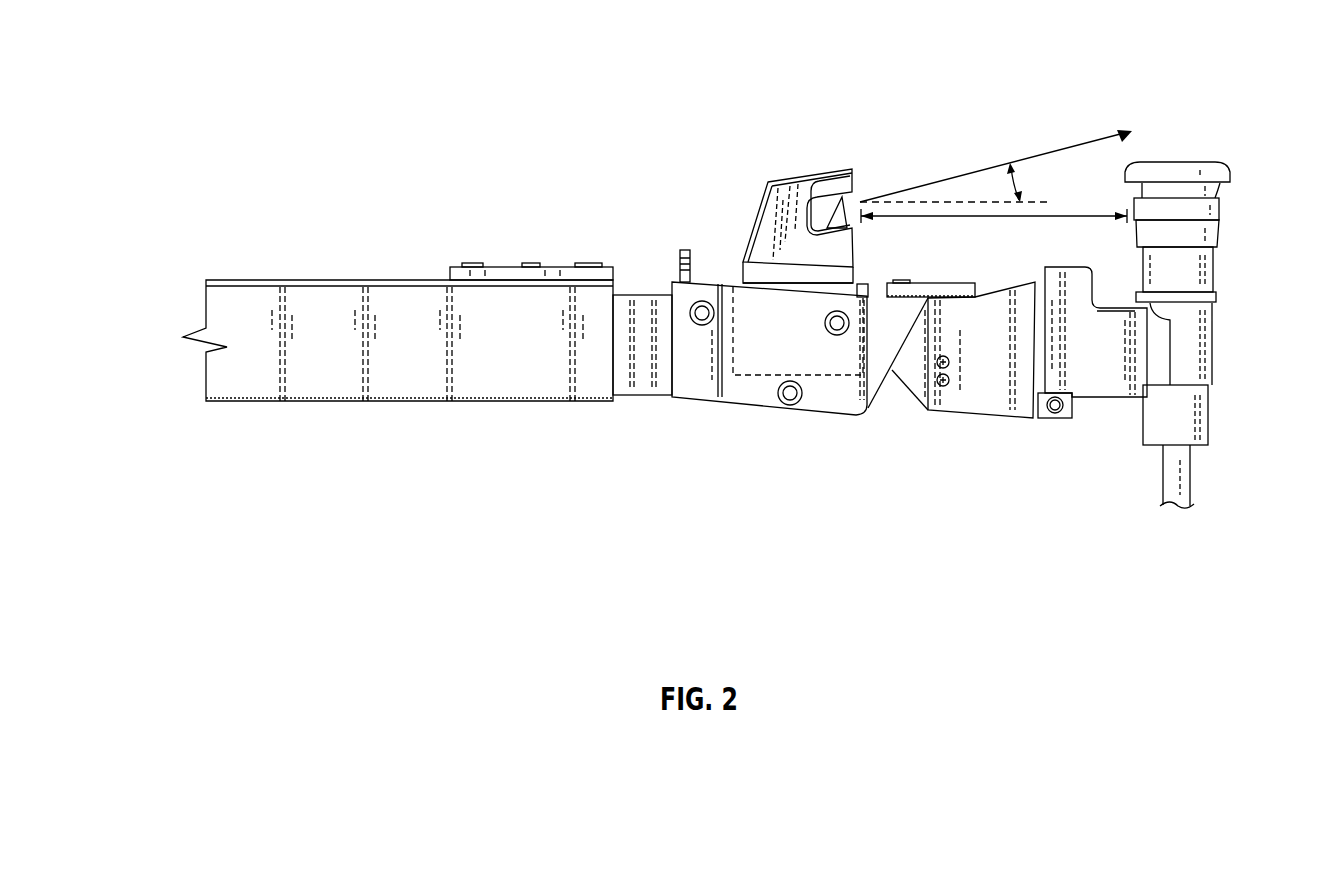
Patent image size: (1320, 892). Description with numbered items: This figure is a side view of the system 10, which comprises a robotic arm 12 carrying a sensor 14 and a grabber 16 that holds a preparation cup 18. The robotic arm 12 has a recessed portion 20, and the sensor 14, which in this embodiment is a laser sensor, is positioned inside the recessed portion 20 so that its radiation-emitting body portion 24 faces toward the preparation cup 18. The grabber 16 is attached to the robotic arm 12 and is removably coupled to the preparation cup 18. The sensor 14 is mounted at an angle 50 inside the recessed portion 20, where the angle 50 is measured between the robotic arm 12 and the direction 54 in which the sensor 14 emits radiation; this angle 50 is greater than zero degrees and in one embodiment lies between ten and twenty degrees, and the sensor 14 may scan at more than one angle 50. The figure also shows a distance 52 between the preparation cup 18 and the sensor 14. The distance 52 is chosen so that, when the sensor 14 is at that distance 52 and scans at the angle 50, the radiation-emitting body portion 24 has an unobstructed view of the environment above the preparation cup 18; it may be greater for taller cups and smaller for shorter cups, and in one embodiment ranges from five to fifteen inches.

The system 10 is at (199, 78).
The robotic arm 12 is at (313, 390).
The sensor 14 is at (818, 190).
The grabber 16 is at (1112, 377).
The preparation cup 18 is at (1205, 167).
The recessed portion 20 is at (851, 283).
The radiation-emitting body portion 24 is at (767, 210).
The angle 50 is at (1021, 182).
The distance 52 is at (948, 218).
The direction 54 is at (915, 183).